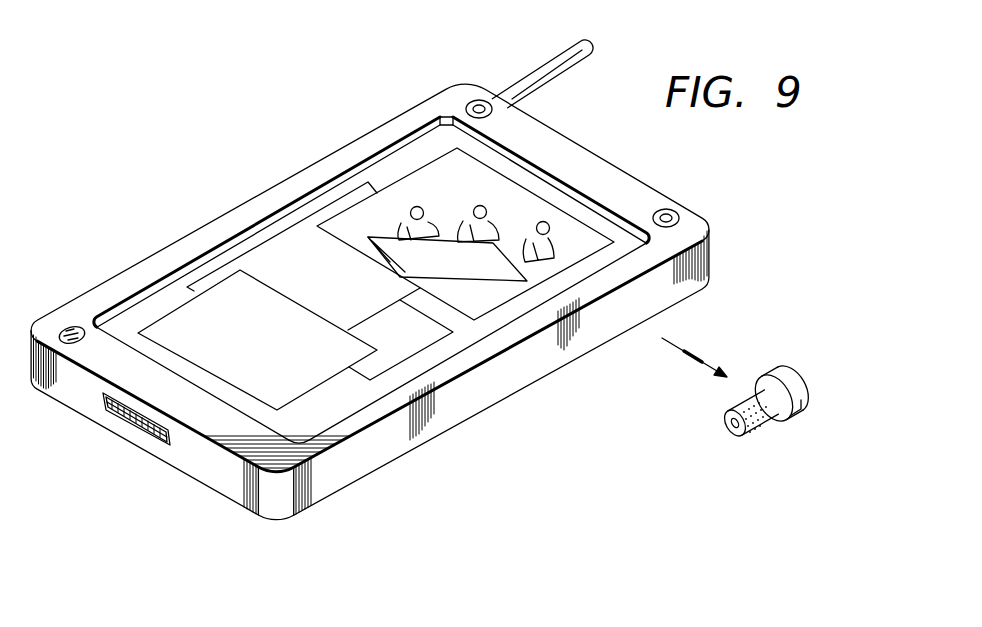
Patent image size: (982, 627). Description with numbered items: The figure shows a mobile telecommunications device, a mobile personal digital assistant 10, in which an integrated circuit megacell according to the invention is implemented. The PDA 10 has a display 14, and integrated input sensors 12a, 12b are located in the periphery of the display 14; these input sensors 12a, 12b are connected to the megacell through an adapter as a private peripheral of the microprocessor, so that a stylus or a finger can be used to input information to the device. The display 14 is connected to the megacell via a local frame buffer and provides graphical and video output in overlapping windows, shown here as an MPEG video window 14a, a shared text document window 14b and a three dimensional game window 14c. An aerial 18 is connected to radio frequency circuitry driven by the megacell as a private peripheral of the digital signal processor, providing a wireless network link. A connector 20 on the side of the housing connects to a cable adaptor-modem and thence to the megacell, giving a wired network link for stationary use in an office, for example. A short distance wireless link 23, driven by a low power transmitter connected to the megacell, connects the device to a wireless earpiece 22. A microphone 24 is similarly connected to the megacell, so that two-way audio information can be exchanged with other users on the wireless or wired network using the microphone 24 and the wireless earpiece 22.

The mobile personal digital assistant 10 is at (592, 393).
The integrated input sensor 12a is at (327, 171).
The integrated input sensor 12b is at (572, 194).
The display 14 is at (125, 320).
The MPEG video window 14a is at (418, 183).
The shared text document window 14b is at (283, 242).
The three dimensional game window 14c is at (183, 317).
The aerial 18 is at (538, 72).
The connector 20 is at (115, 413).
The earpiece 22 is at (792, 388).
The short distance wireless link 23 is at (704, 349).
The microphone 24 is at (62, 328).